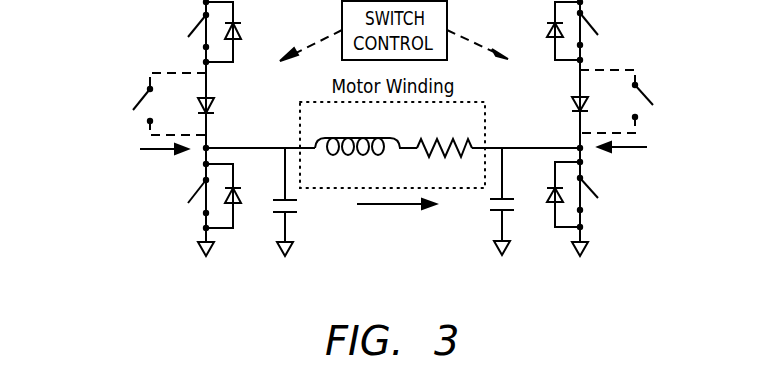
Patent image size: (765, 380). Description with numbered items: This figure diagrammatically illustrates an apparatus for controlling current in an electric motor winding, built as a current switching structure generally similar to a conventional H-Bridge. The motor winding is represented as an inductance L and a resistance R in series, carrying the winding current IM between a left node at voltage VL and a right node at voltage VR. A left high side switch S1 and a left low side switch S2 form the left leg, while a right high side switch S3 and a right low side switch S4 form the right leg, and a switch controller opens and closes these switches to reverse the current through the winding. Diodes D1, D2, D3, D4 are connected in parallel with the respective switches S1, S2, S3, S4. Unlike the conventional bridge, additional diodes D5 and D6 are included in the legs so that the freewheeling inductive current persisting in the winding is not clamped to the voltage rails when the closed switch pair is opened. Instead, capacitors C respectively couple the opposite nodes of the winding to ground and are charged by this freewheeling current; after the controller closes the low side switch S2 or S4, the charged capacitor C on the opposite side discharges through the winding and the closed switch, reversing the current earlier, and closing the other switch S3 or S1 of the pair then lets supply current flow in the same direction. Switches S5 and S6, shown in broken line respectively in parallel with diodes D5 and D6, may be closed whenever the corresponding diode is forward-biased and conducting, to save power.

The left high side switch S1 is at (183, 30).
The left low side switch S2 is at (181, 195).
The right high side switch S3 is at (607, 28).
The right low side switch S4 is at (607, 194).
The switch in parallel with diode D5 S5 is at (153, 104).
The switch in parallel with diode D6 S6 is at (635, 101).
The diode D1 is at (248, 32).
The diode D2 is at (245, 189).
The diode D3 is at (540, 31).
The diode D4 is at (541, 187).
The diode D5 is at (221, 106).
The diode D6 is at (567, 105).
The capacitor C is at (393, 202).
The inductance L is at (366, 132).
The resistance R is at (444, 133).
The left node voltage VL is at (151, 149).
The right node voltage VR is at (636, 148).
The winding current IM is at (396, 218).